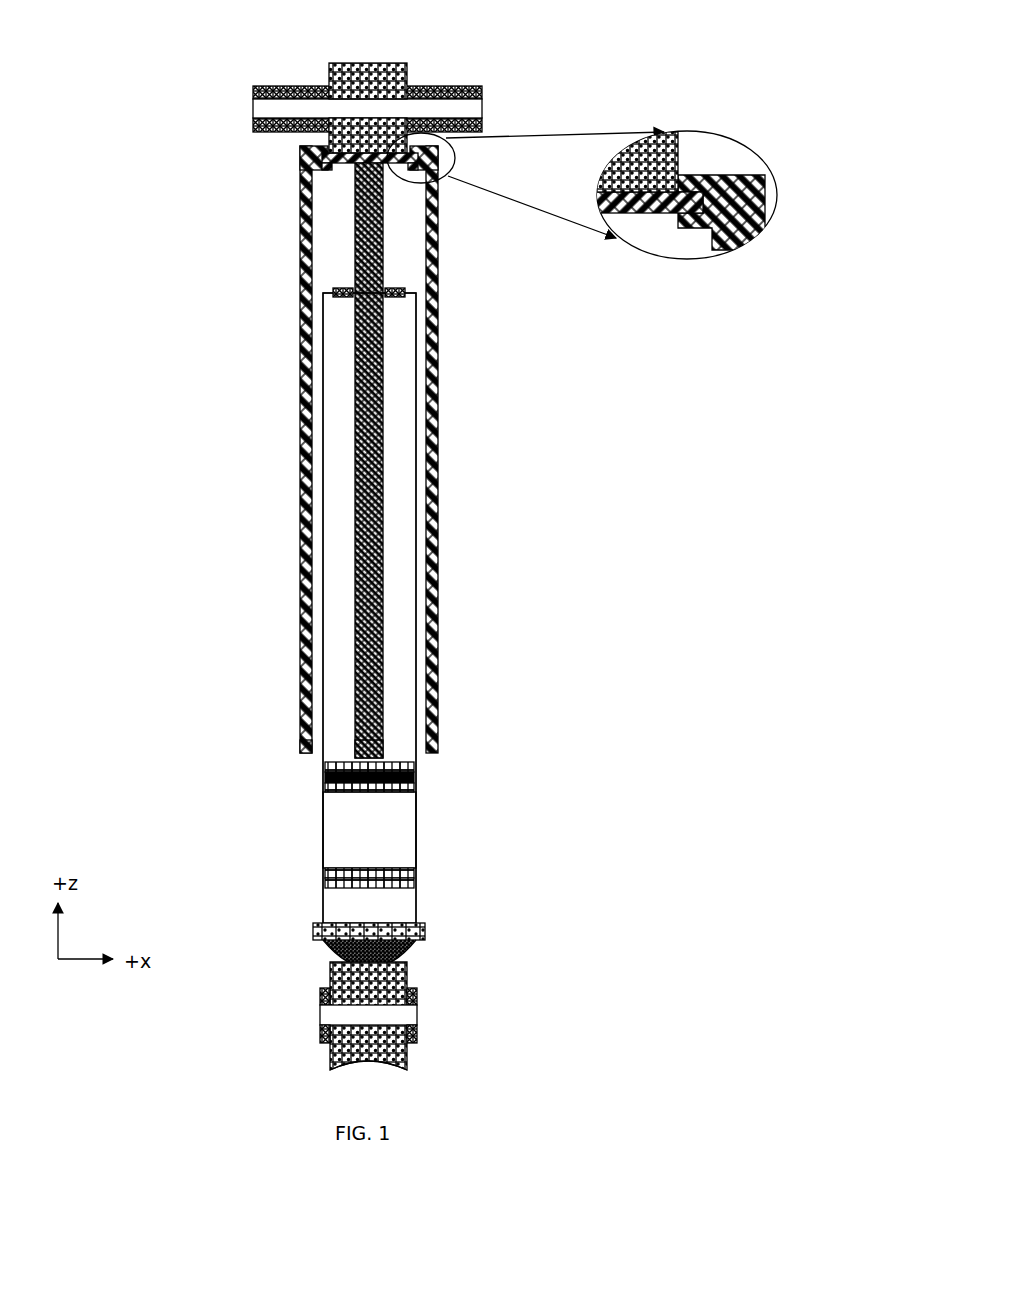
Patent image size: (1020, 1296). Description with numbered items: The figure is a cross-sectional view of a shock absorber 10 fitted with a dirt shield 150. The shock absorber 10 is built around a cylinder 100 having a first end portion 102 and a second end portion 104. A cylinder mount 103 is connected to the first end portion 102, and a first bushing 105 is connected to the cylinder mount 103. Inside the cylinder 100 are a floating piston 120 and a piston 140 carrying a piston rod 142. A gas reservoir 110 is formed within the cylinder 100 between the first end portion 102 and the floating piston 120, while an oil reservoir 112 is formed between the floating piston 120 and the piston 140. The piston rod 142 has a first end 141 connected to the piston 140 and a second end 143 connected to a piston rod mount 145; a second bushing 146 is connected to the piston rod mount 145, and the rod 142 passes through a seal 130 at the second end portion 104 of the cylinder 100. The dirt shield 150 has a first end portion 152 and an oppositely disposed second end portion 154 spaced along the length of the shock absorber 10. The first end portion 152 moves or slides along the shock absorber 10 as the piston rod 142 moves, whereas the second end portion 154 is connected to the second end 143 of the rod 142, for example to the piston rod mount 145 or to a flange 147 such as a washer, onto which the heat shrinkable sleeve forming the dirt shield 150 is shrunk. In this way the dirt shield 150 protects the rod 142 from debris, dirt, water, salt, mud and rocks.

The shock absorber 10 is at (146, 240).
The cylinder 100 is at (420, 545).
The first end portion 102 is at (418, 923).
The cylinder mount 103 is at (400, 1068).
The second end portion 104 is at (418, 304).
The first bushing 105 is at (420, 988).
The gas reservoir 110 is at (333, 906).
The oil reservoir 112 is at (338, 827).
The floating piston 120 is at (398, 870).
The seal 130 is at (336, 290).
The piston 140 is at (396, 790).
The first end 141 is at (383, 746).
The piston rod 142 is at (386, 640).
The second end 143 is at (395, 175).
The piston rod mount 145 is at (392, 63).
The second bushing 146 is at (470, 86).
The flange 147 is at (338, 167).
The dirt shield 150 is at (296, 509).
The first end portion 152 is at (300, 750).
The second end portion 154 is at (300, 153).